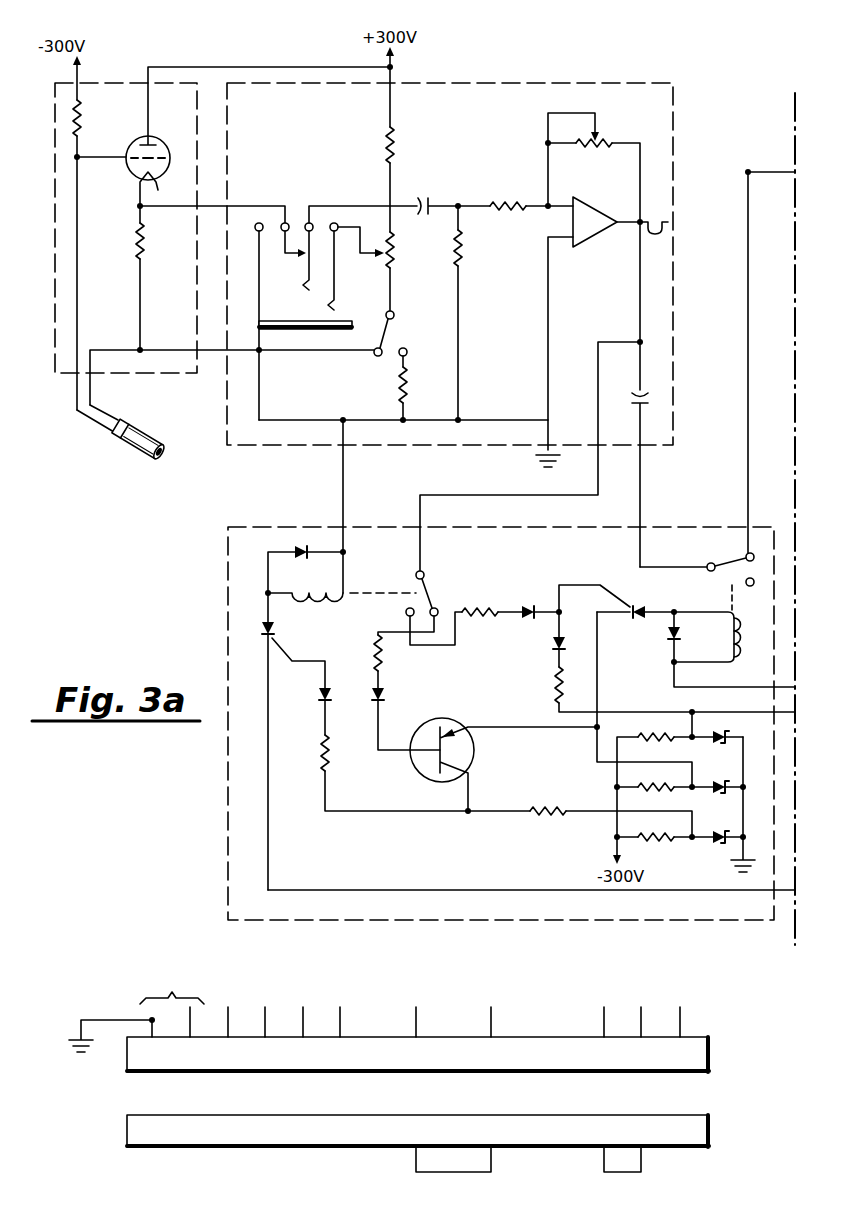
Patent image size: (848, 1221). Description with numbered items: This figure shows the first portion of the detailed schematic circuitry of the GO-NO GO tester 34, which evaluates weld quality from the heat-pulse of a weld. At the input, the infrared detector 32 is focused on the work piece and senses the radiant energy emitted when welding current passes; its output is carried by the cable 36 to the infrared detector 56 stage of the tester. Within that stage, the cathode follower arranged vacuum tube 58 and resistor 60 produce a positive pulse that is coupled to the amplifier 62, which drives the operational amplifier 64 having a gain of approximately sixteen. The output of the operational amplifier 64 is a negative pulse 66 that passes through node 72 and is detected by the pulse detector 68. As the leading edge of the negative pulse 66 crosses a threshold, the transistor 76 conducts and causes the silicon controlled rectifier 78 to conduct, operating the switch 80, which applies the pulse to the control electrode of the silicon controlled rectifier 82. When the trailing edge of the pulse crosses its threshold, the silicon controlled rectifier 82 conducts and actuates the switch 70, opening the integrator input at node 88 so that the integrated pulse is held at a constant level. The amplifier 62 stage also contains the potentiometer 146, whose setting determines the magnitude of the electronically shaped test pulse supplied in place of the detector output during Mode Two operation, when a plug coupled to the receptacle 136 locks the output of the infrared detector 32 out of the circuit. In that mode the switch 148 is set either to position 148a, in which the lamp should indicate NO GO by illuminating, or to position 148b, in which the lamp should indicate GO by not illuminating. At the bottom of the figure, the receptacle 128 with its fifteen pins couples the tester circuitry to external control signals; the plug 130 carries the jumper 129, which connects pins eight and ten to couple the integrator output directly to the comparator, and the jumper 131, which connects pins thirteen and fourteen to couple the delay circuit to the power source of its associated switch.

The GO-NO GO tester 34 is at (129, 790).
The infrared detector 56 is at (117, 80).
The vacuum tube 58 is at (134, 144).
The resistor 60 is at (134, 244).
The infrared detector 32 is at (130, 448).
The cable 36 is at (111, 420).
The amplifier 62 is at (502, 80).
The potentiometer 146 is at (374, 258).
The receptacle 136 is at (290, 330).
The switch 148 is at (394, 321).
The switch position 148a is at (372, 358).
The switch position 148b is at (400, 360).
The operational amplifier 64 is at (598, 239).
The node 72 is at (636, 218).
The negative pulse 66 is at (668, 218).
The node 88 is at (746, 170).
The pulse detector 68 is at (290, 525).
The switch 80 is at (356, 591).
The silicon controlled rectifier 78 is at (276, 622).
The transistor 76 is at (430, 723).
The silicon controlled rectifier 82 is at (632, 604).
The switch 70 is at (727, 600).
The receptacle 128 is at (700, 1037).
The plug 130 is at (700, 1115).
The jumper 129 is at (493, 1163).
The jumper 131 is at (643, 1163).